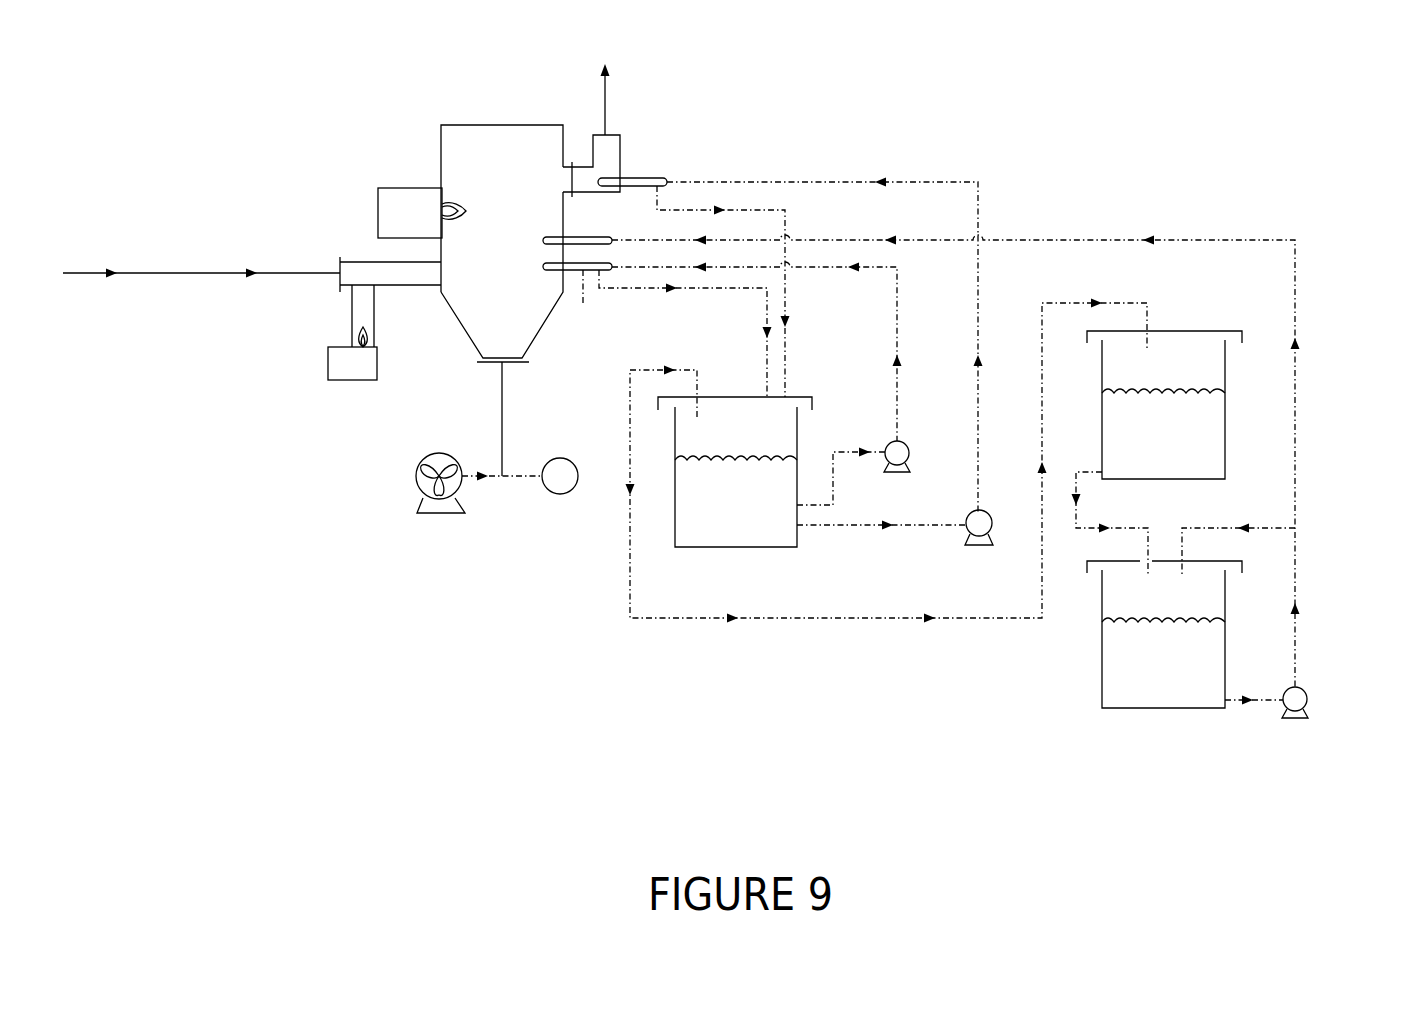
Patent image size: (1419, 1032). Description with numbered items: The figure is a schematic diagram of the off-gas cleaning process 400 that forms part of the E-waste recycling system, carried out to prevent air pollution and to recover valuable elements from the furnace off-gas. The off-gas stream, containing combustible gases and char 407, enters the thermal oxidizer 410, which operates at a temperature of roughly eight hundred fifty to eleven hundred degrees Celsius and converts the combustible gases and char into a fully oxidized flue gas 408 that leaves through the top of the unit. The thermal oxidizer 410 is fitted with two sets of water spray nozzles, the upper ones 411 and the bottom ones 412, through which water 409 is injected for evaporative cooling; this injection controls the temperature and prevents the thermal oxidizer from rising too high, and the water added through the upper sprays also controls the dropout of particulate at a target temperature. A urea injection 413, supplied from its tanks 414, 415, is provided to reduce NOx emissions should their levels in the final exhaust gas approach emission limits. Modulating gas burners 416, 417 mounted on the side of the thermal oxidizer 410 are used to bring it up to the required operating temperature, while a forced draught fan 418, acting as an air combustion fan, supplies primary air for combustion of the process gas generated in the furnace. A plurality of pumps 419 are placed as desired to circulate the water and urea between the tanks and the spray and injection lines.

The off-gas cleaning process 400 is at (1052, 156).
The combustible gases and char 407 is at (201, 297).
The fully oxidized flue gas 408 is at (604, 113).
The water 409 is at (673, 535).
The thermal oxidizer 410 is at (424, 135).
The upper water spray nozzles 411 is at (638, 177).
The bottom water spray nozzles 412 is at (545, 268).
The urea injection 413 is at (545, 237).
The urea tank 414 is at (1225, 443).
The urea tank 415 is at (1225, 657).
The modulating gas burner 416 is at (378, 205).
The modulating gas burner 417 is at (340, 380).
The forced draught fan 418 is at (417, 503).
The pump 419 is at (969, 545).